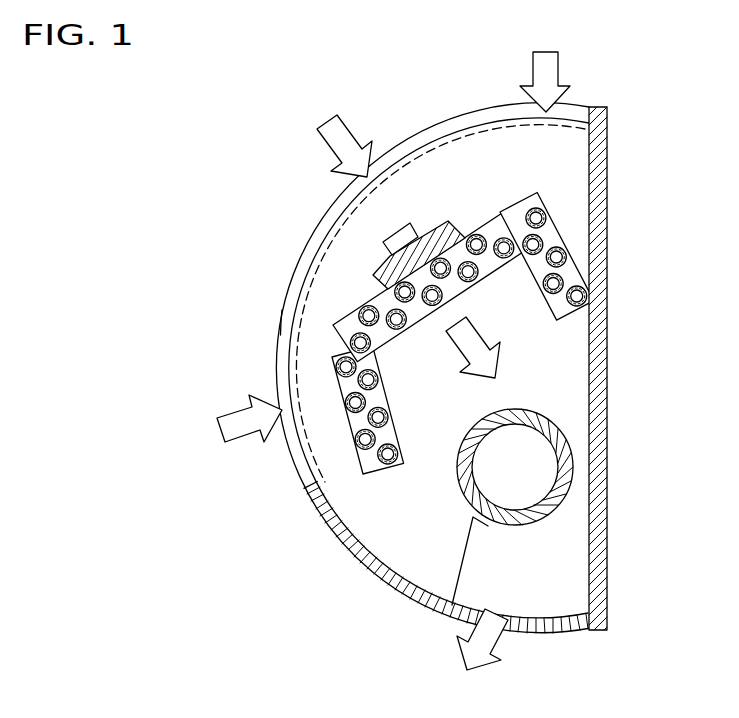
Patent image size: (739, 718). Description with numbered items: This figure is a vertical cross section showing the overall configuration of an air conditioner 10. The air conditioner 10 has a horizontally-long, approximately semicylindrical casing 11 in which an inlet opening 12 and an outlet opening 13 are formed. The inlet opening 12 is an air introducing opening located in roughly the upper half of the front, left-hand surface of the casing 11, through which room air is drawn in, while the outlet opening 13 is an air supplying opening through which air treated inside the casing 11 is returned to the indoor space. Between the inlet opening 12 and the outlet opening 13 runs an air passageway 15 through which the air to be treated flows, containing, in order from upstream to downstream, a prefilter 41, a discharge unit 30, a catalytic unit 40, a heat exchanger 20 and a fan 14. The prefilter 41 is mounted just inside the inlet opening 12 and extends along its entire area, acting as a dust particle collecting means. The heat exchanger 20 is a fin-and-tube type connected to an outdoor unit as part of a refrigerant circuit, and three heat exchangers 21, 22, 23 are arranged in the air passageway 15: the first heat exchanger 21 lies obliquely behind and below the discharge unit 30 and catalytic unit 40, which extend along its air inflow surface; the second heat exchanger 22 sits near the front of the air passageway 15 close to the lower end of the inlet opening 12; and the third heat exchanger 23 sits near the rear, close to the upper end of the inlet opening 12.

The air conditioner 10 is at (468, 369).
The casing 11 is at (609, 250).
The inlet opening 12 is at (417, 150).
The outlet opening 13 is at (532, 626).
The fan 14 is at (573, 457).
The air passageway 15 is at (320, 270).
The heat exchanger 20 is at (430, 282).
The first heat exchanger 21 is at (392, 338).
The second heat exchanger 22 is at (385, 435).
The third heat exchanger 23 is at (535, 270).
The discharge unit 30 is at (409, 221).
The catalytic unit 40 is at (375, 277).
The prefilter 41 is at (295, 320).